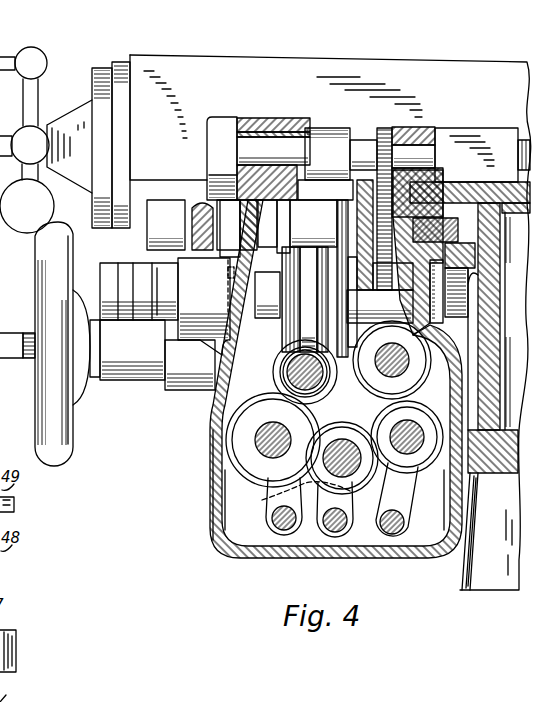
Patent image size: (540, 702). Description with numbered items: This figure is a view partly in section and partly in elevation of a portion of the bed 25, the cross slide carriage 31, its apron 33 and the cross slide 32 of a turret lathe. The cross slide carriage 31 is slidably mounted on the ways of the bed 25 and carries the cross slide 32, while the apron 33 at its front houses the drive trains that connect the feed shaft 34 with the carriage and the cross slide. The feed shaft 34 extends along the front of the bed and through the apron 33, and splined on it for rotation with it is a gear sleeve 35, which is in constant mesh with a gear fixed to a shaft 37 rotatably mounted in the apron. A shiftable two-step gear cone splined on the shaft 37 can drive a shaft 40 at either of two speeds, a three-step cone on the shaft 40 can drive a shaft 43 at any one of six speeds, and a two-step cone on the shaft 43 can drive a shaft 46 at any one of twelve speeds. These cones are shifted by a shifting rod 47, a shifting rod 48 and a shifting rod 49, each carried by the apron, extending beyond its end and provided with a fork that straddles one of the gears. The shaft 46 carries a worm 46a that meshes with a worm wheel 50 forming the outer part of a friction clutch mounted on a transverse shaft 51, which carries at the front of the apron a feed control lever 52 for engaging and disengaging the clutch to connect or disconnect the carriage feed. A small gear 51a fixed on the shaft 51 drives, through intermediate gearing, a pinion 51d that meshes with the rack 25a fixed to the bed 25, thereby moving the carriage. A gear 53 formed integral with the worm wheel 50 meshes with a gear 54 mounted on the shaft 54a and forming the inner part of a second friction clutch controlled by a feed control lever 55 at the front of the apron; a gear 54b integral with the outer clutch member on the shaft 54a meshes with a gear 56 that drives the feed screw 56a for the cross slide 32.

The bed 25 is at (465, 574).
The rack 25a is at (466, 215).
The cross slide carriage 31 is at (238, 190).
The cross slide 32 is at (444, 74).
The apron 33 is at (211, 506).
The feed shaft 34 is at (383, 374).
The gear sleeve 35 is at (343, 440).
The shaft 37 is at (493, 467).
The shaft 40 is at (262, 499).
The shaft 43 is at (255, 438).
The shaft 46 is at (287, 375).
The worm 46a is at (284, 386).
The shifting rod 47 is at (392, 535).
The shifting rod 48 is at (336, 532).
The shifting rod 49 is at (282, 531).
The worm wheel 50 is at (296, 318).
The shaft 51 is at (240, 293).
The small gear 51a is at (261, 319).
The pinion 51d is at (463, 300).
The feed control lever 52 is at (150, 300).
The gear 53 is at (342, 299).
The gear 54 is at (340, 207).
The shaft 54a is at (313, 223).
The gear 54b is at (436, 184).
The feed control lever 55 is at (182, 230).
The gear 56 is at (384, 128).
The feed screw 56a is at (418, 152).